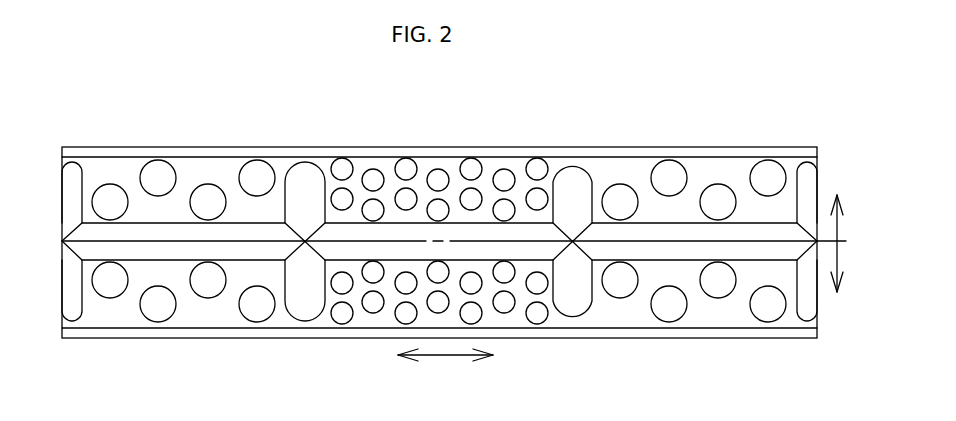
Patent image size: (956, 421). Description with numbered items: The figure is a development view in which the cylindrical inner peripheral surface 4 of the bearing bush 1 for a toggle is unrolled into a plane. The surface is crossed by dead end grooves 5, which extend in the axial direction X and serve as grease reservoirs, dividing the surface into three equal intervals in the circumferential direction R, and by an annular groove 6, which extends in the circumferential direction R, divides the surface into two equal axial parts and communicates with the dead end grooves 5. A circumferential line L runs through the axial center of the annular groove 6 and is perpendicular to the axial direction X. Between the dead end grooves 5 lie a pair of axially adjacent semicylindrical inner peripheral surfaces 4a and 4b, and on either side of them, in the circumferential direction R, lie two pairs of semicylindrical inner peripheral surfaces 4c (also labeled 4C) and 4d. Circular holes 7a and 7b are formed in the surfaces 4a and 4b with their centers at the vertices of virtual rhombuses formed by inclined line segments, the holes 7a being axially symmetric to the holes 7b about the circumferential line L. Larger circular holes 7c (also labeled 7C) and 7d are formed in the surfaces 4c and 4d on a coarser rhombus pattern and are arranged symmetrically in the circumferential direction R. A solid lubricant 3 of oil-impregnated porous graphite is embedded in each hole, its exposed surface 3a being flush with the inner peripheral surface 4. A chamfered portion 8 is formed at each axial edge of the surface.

The bearing bush 1 is at (577, 132).
The solid lubricant 3 is at (156, 176).
The exposed surface 3a is at (258, 172).
The cylindrical inner peripheral surface 4 is at (270, 320).
The semicylindrical inner peripheral surface 4a is at (503, 165).
The semicylindrical inner peripheral surface 4b is at (510, 325).
The semicylindrical inner peripheral surface 4c is at (718, 168).
The semicylindrical inner peripheral surface 4C is at (98, 172).
The semicylindrical inner peripheral surface 4d is at (170, 323).
The dead end groove 5 is at (304, 170).
The annular groove 6 is at (90, 249).
The circular hole 7a is at (452, 173).
The circular hole 7b is at (534, 318).
The circular hole 7c is at (689, 171).
The circular hole 7C is at (175, 173).
The circular hole 7d is at (116, 317).
The chamfered portion 8 is at (553, 153).
The circumferential line L is at (60, 240).
The circumferential direction R is at (447, 358).
The axial direction X is at (840, 243).